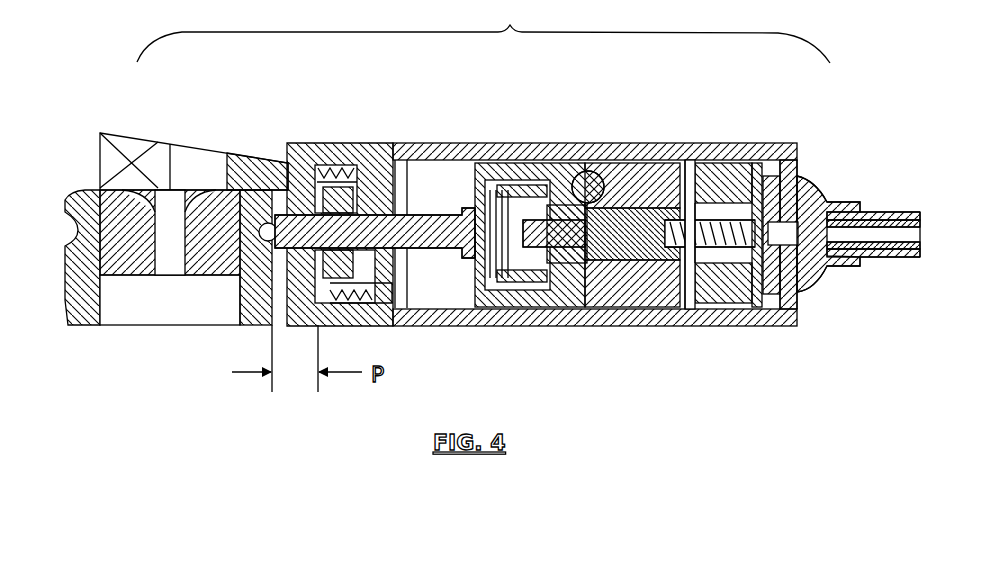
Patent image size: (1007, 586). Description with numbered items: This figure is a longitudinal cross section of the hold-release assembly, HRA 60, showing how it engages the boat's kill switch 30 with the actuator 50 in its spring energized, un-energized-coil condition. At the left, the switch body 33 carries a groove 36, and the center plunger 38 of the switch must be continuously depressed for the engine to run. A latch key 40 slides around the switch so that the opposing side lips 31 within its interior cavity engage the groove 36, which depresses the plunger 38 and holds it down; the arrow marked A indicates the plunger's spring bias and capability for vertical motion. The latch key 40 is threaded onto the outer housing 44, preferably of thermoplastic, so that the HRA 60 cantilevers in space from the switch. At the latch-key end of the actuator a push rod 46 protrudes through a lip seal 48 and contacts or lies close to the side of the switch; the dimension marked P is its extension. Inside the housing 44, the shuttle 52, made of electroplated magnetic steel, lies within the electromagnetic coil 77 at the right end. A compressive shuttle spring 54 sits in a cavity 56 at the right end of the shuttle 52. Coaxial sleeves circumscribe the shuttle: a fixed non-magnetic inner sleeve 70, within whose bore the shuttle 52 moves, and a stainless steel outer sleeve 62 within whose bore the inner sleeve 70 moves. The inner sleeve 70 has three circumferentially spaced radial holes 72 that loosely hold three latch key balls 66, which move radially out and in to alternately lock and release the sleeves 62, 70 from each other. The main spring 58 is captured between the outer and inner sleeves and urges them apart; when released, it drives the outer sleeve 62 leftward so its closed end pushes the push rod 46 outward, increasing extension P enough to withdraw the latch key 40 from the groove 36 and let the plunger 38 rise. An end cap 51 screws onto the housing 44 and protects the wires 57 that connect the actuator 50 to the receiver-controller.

The hold-release assembly (HRA) 60 is at (483, 31).
The kill switch 30 is at (142, 292).
The switch body 33 is at (68, 312).
The groove 36 is at (84, 192).
The plunger 38 is at (118, 188).
The latch key 40 is at (256, 138).
The side lips 31 is at (290, 205).
The lip seal 48 is at (388, 157).
The push rod 46 is at (390, 327).
The actuator 50 is at (482, 126).
The outer housing 44 is at (638, 147).
The main spring 58 is at (518, 180).
The outer sleeve 62 is at (509, 322).
The inner sleeve 70 is at (575, 322).
The latch key balls 66 is at (594, 172).
The radial holes 72 is at (615, 322).
The electromagnetic coil 77 is at (713, 172).
The cavity 56 is at (768, 160).
The shuttle 52 is at (673, 322).
The shuttle spring 54 is at (790, 162).
The end cap 51 is at (828, 200).
The wires 57 is at (880, 263).